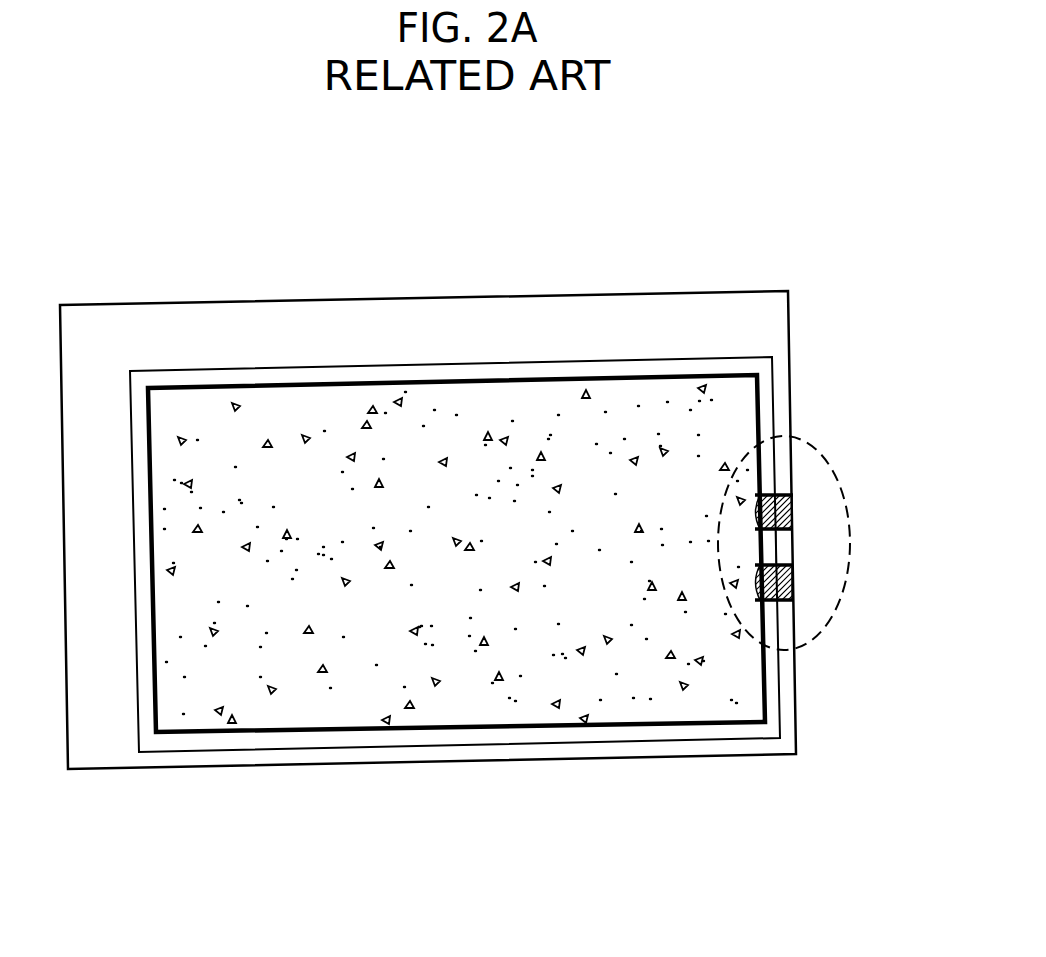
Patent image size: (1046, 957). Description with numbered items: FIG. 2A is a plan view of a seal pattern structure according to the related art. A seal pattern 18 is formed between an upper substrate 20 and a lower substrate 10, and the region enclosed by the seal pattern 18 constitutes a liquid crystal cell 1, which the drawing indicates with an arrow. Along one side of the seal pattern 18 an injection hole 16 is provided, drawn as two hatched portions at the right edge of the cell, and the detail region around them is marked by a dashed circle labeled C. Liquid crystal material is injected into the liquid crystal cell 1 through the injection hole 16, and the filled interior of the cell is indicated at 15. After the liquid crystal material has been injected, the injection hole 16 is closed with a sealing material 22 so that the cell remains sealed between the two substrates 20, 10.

The liquid crystal cell 1 is at (793, 263).
The lower substrate 10 is at (712, 325).
The upper substrate 20 is at (765, 395).
The seal pattern 18 is at (783, 704).
The phosphor layer 15 is at (681, 680).
The injection hole 16 is at (793, 488).
The sealing material 22 is at (780, 585).
The detail region C is at (848, 543).